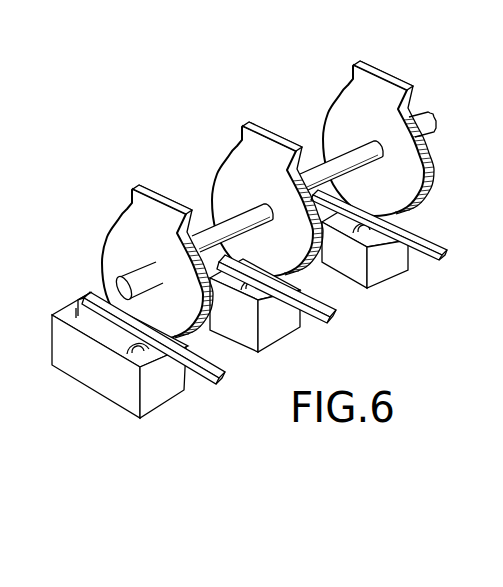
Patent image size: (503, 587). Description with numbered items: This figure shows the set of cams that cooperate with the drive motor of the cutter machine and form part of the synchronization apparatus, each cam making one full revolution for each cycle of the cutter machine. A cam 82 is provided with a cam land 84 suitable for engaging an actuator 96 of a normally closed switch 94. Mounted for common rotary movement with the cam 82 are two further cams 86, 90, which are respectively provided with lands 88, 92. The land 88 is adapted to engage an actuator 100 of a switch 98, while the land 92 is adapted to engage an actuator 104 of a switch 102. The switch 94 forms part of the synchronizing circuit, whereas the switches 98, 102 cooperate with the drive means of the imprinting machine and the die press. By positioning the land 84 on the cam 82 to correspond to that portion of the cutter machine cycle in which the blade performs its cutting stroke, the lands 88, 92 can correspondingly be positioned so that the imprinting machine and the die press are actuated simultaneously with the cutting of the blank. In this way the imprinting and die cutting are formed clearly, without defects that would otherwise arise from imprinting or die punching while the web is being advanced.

The cam 82 is at (118, 244).
The cam land 84 is at (140, 202).
The cam 86 is at (234, 160).
The land 88 is at (258, 145).
The cam 90 is at (345, 103).
The land 92 is at (378, 92).
The normally closed switch 94 is at (96, 376).
The actuator 96 is at (204, 378).
The switch 98 is at (281, 328).
The actuator 100 is at (321, 315).
The switch 102 is at (397, 262).
The actuator 104 is at (438, 240).